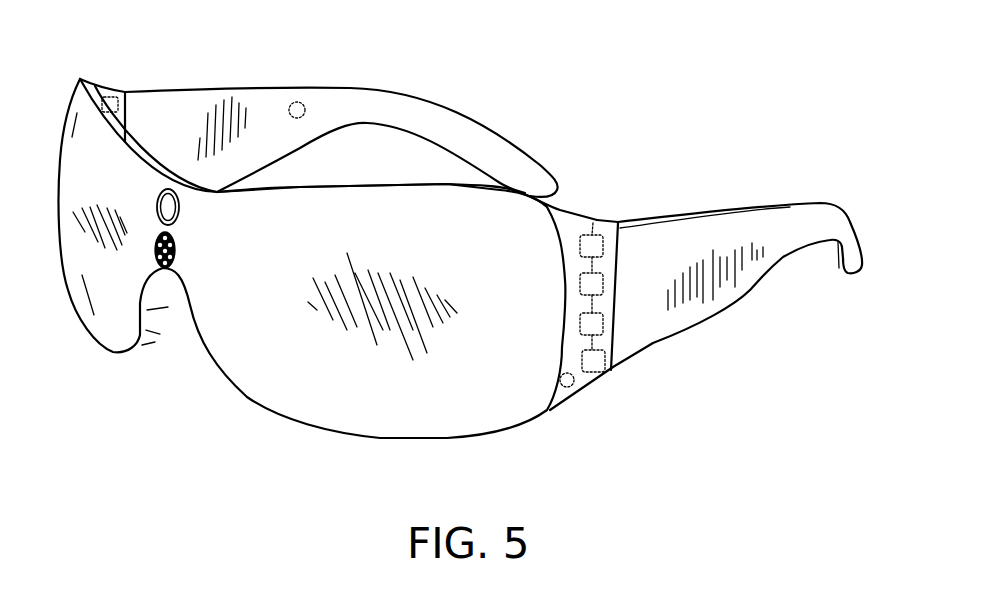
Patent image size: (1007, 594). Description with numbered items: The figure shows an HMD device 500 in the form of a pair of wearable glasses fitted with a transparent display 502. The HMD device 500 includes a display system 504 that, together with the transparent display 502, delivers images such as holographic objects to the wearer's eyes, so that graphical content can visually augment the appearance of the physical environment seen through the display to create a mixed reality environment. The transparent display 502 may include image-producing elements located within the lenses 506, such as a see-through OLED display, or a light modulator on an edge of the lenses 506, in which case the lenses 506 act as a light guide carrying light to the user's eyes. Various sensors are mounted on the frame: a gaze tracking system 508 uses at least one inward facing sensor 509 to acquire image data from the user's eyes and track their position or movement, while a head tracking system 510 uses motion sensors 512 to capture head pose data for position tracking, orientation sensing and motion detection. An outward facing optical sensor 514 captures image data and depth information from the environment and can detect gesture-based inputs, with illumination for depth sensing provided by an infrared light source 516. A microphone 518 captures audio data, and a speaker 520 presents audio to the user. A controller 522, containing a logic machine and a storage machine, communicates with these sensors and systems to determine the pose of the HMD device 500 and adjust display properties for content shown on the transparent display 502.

The HMD device 500 is at (513, 72).
The transparent display 502 is at (263, 377).
The display system 504 is at (593, 223).
The lenses 506 is at (150, 323).
The gaze tracking system 508 is at (603, 284).
The inward facing sensor 509 is at (216, 185).
The head tracking system 510 is at (603, 321).
The motion sensors 512 is at (603, 357).
The optical sensor 514 is at (186, 210).
The infrared light source 516 is at (188, 257).
The microphone 518 is at (577, 392).
The speaker 520 is at (299, 91).
The controller 522 is at (112, 90).